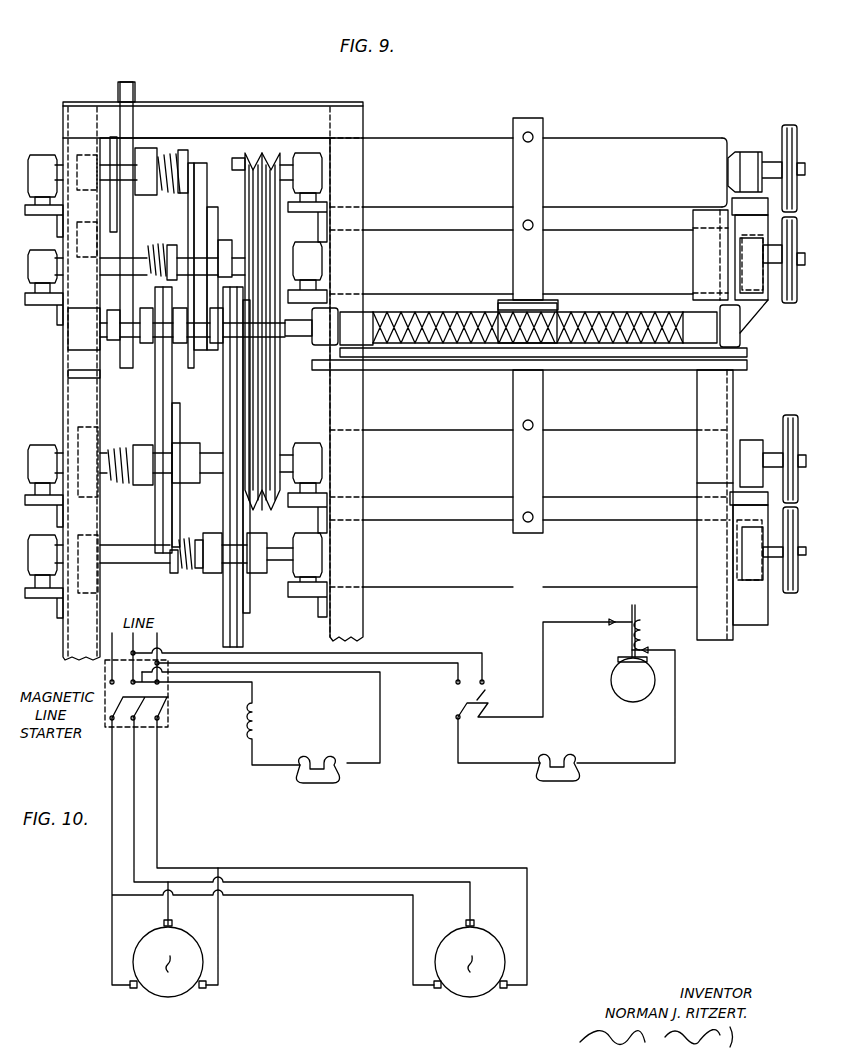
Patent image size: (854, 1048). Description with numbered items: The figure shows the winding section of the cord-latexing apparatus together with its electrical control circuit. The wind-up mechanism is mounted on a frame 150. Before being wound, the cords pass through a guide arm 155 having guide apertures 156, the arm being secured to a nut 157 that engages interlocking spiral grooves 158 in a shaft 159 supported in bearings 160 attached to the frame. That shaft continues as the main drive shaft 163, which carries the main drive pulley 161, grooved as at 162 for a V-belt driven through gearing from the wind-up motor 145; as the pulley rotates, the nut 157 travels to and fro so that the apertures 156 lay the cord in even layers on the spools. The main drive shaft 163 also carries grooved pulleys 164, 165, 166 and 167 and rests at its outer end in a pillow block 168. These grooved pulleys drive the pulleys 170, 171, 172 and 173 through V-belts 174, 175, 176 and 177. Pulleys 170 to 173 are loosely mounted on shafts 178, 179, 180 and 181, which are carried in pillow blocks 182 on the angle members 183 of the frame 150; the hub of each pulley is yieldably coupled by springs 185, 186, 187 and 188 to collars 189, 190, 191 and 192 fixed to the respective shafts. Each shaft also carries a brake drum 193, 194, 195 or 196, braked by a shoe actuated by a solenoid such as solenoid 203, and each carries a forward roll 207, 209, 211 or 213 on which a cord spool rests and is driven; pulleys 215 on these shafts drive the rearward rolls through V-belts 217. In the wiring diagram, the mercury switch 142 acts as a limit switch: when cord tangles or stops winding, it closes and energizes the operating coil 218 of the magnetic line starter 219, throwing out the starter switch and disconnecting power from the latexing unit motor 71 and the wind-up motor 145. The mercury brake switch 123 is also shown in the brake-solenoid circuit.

In FIG. 9, the frame 150 is at (312, 102).
In FIG. 9, the guide arm 155 is at (513, 177).
In FIG. 9, the guide apertures 156 is at (523, 137).
In FIG. 9, the nut 157 is at (505, 293).
In FIG. 9, the interlocking spiral grooves 158 is at (613, 307).
In FIG. 9, the shaft 159 is at (692, 307).
In FIG. 9, the bearings 160 is at (333, 312).
In FIG. 9, the main drive pulley 161 is at (283, 387).
In FIG. 9, the groove 162 is at (272, 160).
In FIG. 9, the main drive shaft 163 is at (295, 336).
In FIG. 9, the grooved pulley 164 is at (118, 357).
In FIG. 9, the grooved pulley 165 is at (155, 363).
In FIG. 9, the grooved pulley 166 is at (187, 360).
In FIG. 9, the grooved pulley 167 is at (222, 363).
In FIG. 9, the pillow block 168 is at (83, 345).
In FIG. 9, the pulley 170 is at (118, 90).
In FIG. 9, the pulley 171 is at (153, 552).
In FIG. 9, the pulley 172 is at (203, 173).
In FIG. 9, the pulley 173 is at (223, 610).
In FIG. 9, the V-belt 174 is at (130, 82).
In FIG. 9, the V-belt 175 is at (160, 420).
In FIG. 9, the V-belt 176 is at (198, 193).
In FIG. 9, the V-belt 177 is at (233, 627).
In FIG. 9, the shaft 178 is at (233, 162).
In FIG. 9, the shaft 179 is at (208, 457).
In FIG. 9, the shaft 180 is at (240, 240).
In FIG. 9, the shaft 181 is at (115, 560).
In FIG. 9, the pillow blocks 182 is at (39, 150).
In FIG. 9, the angle members 183 is at (30, 217).
In FIG. 9, the spring 185 is at (172, 157).
In FIG. 9, the spring 186 is at (125, 483).
In FIG. 9, the spring 187 is at (147, 250).
In FIG. 9, the spring 188 is at (182, 540).
In FIG. 9, the collar 189 is at (185, 153).
In FIG. 9, the collar 190 is at (107, 487).
In FIG. 9, the collar 191 is at (138, 242).
In FIG. 9, the collar 192 is at (175, 573).
In FIG. 9, the brake drum 193 is at (85, 137).
In FIG. 9, the brake drum 194 is at (73, 432).
In FIG. 9, the brake drum 195 is at (65, 343).
In FIG. 9, the brake drum 196 is at (100, 602).
In FIG. 9, the forward roll 207 is at (637, 137).
In FIG. 9, the forward roll 209 is at (615, 430).
In FIG. 9, the forward roll 211 is at (623, 228).
In FIG. 9, the forward roll 213 is at (623, 520).
In FIG. 9, the pulleys 215 is at (805, 125).
In FIG. 9, the V-belts 217 is at (790, 123).
In FIG. 10, the magnetic line starter 219 is at (168, 727).
In FIG. 10, the operating coil 218 is at (255, 717).
In FIG. 10, the mercury switch 142 is at (347, 777).
In FIG. 10, the mercury brake switch 123 is at (577, 775).
In FIG. 10, the solenoid 203 is at (640, 628).
In FIG. 10, the latexing unit motor 71 is at (155, 954).
In FIG. 10, the wind-up motor 145 is at (441, 980).